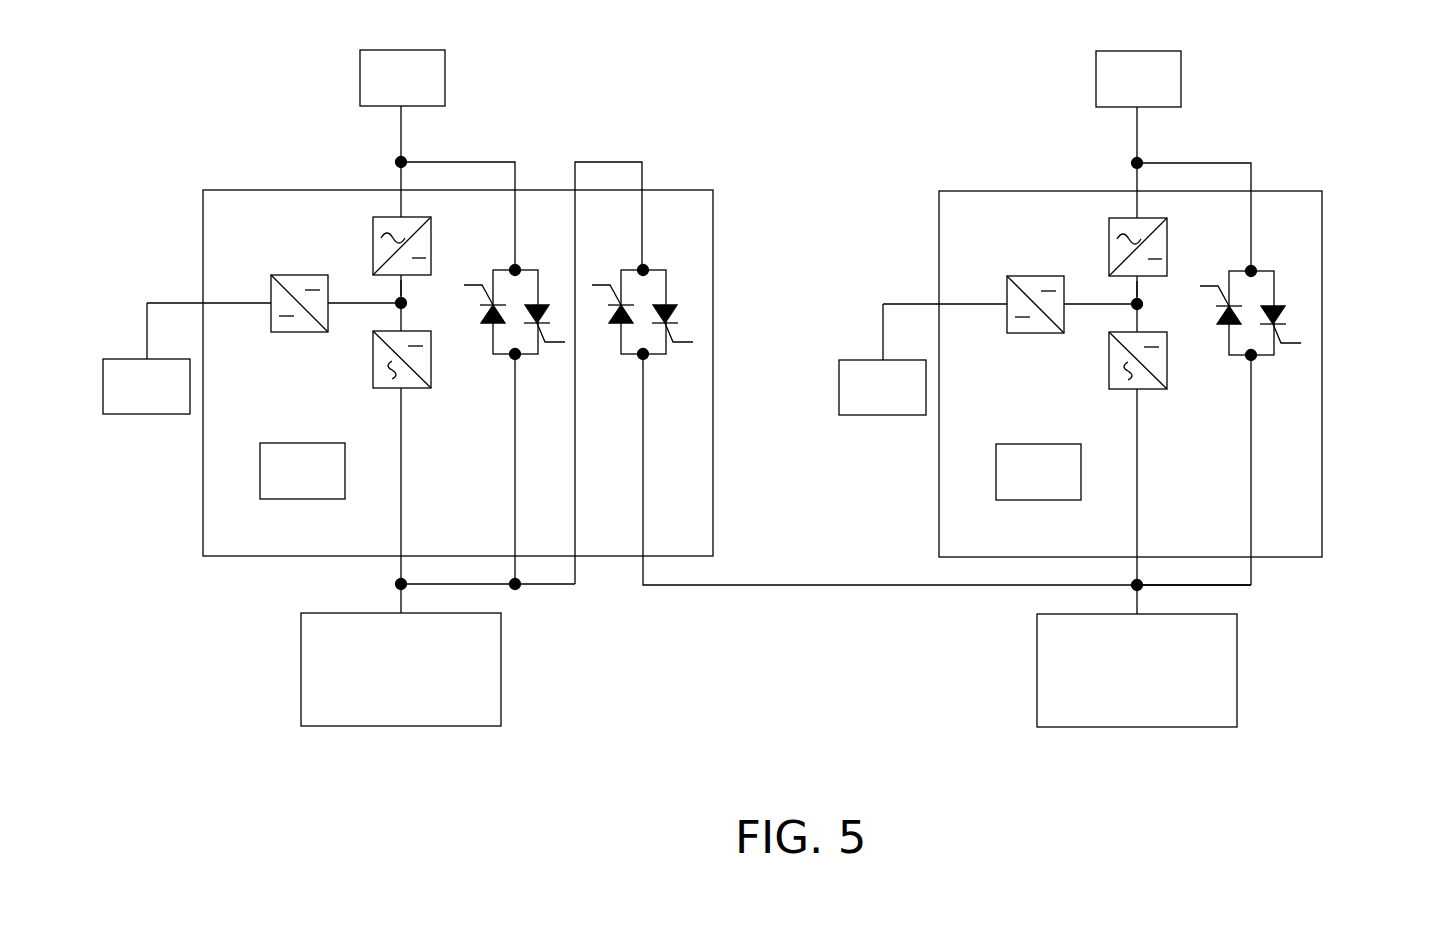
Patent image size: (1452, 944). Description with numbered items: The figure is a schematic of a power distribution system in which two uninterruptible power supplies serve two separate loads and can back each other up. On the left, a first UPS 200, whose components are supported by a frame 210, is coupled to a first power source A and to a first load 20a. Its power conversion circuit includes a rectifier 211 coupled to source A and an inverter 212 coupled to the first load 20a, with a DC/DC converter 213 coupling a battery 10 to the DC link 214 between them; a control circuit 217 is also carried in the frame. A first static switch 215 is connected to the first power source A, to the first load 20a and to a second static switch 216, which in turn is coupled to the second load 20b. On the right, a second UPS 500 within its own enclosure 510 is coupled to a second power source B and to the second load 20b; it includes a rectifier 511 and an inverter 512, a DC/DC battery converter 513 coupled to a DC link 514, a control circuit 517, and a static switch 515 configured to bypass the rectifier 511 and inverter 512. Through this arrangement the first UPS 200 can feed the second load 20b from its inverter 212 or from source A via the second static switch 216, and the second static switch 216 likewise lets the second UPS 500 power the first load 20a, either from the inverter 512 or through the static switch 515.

The battery 10 is at (103, 387).
The first UPS 200 is at (487, 416).
The frame 210 is at (713, 375).
The rectifier 211 is at (373, 246).
The inverter 212 is at (373, 360).
The DC/DC converter 213 is at (298, 333).
The DC bus 214 is at (403, 288).
The first static switch 215 is at (503, 392).
The second static switch 216 is at (676, 391).
The control circuit 217 is at (300, 499).
The first load 20a is at (401, 726).
The second UPS 500 is at (1161, 417).
The second UPS 510 is at (1163, 374).
The rectifier 511 is at (1114, 237).
The inverter 512 is at (1110, 375).
The DC/DC battery converter 513 is at (1009, 324).
The DC link 514 is at (1175, 256).
The static switch 515 is at (1227, 426).
The controller 517 is at (1017, 491).
The second load 20b is at (1137, 698).